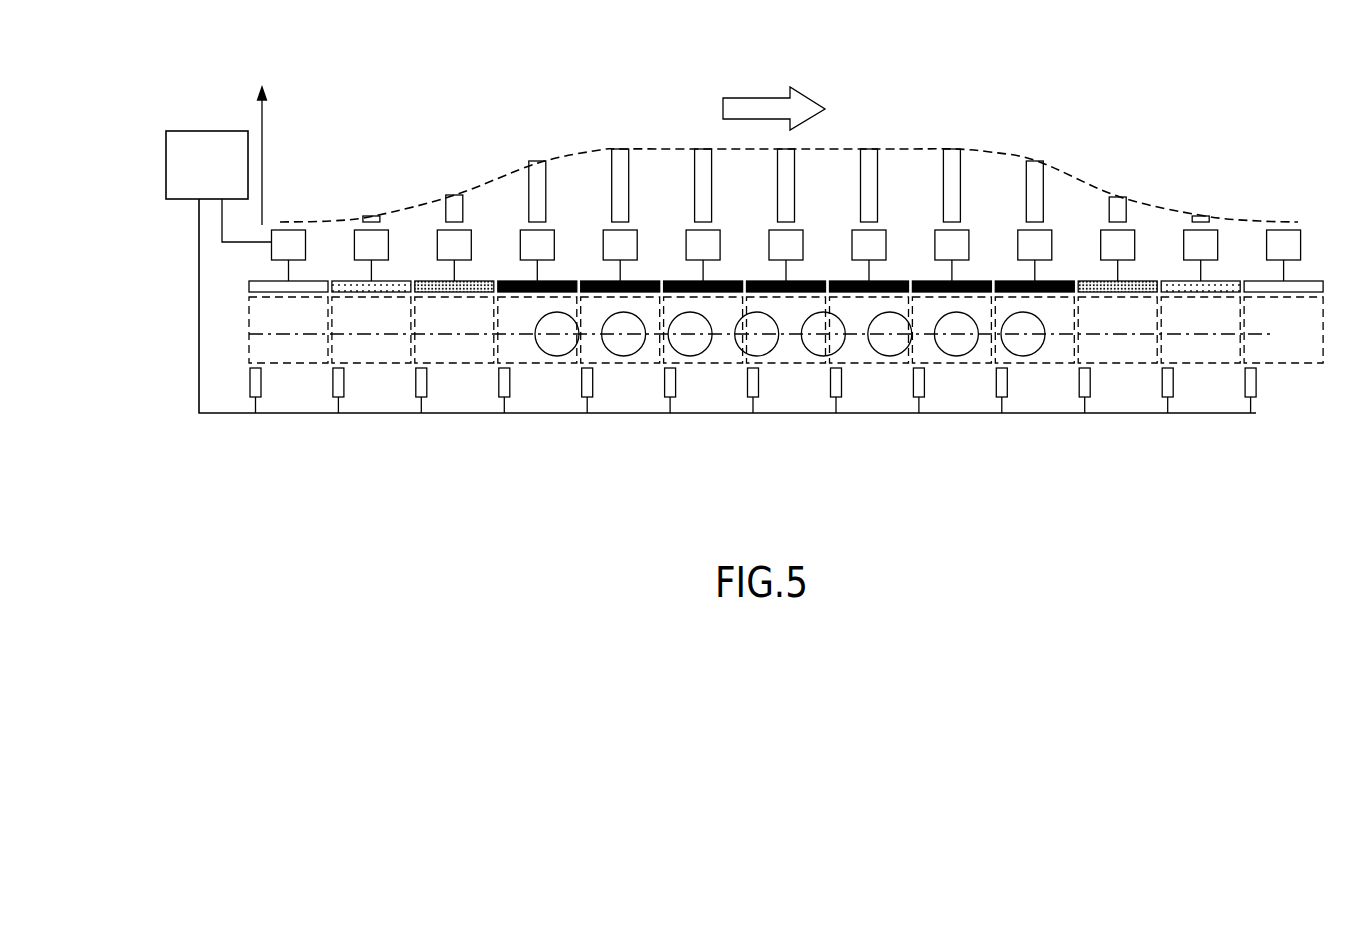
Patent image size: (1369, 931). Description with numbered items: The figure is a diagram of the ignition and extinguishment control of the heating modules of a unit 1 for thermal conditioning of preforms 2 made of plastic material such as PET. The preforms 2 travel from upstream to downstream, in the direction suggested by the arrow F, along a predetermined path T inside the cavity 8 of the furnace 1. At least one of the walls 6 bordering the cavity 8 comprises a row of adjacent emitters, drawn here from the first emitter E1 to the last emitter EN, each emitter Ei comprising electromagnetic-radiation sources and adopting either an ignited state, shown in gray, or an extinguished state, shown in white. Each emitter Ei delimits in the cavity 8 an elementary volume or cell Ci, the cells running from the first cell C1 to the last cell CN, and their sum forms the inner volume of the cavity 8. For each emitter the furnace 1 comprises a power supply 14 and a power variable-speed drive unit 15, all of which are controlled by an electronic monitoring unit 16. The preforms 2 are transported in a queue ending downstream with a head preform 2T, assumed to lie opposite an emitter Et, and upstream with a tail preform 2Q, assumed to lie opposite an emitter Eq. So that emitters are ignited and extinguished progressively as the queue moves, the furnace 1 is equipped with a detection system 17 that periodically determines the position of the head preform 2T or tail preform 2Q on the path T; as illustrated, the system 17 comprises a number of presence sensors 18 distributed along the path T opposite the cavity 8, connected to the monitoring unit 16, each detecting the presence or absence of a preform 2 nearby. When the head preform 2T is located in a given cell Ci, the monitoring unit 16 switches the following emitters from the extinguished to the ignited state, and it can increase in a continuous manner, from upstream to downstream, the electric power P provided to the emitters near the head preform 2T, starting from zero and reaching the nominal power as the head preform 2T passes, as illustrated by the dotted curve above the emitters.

The unit for thermal conditioning (furnace) 1 is at (1108, 119).
The preforms 2 is at (623, 357).
The tail preform 2Q is at (556, 357).
The head preform 2T is at (1030, 356).
The walls 6 is at (236, 287).
The cavity 8 is at (236, 345).
The power supply 14 is at (209, 235).
The power variable-speed drive unit 15 is at (786, 255).
The monitoring unit 16 is at (207, 165).
The detection system 17 is at (186, 378).
The presence sensors 18 is at (250, 387).
The arrow indicating direction of travel F is at (760, 107).
The electric power P is at (275, 153).
The path T is at (378, 333).
The first emitter E1 is at (291, 304).
The emitter opposite the tail preform Eq is at (515, 269).
The emitter Ei is at (644, 269).
The emitter opposite the head preform Et is at (1013, 269).
The last emitter EN is at (1285, 304).
The first cell C1 is at (275, 365).
The cell Ci is at (548, 294).
The last cell CN is at (1285, 365).